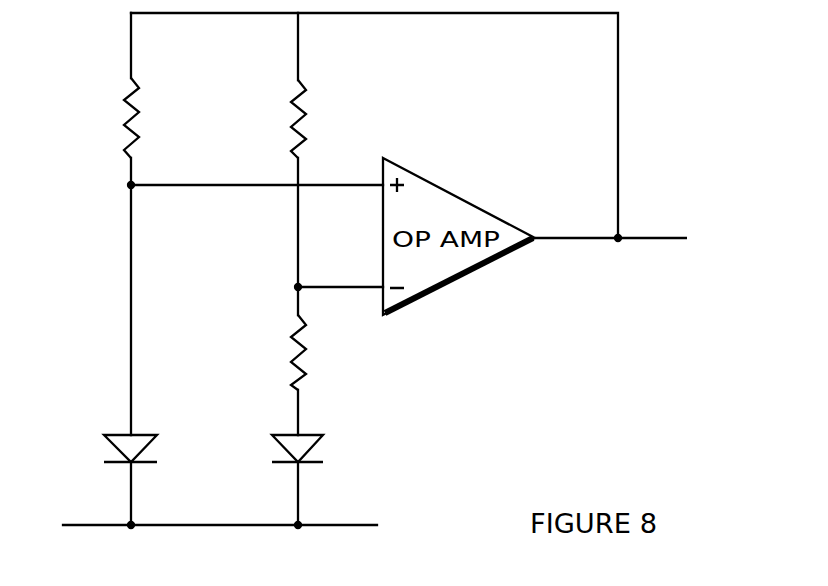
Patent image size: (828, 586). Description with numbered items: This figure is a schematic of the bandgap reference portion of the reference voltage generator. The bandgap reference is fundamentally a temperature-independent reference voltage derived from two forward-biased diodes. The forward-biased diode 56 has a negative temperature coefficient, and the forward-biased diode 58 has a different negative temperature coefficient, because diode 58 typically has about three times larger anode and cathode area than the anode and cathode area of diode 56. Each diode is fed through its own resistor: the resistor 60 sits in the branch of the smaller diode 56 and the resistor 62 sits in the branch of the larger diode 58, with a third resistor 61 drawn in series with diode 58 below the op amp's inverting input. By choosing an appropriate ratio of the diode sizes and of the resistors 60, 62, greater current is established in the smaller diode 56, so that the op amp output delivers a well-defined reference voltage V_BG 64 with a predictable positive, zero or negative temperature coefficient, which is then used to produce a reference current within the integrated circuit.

The forward-biased diode 56 is at (141, 463).
The forward-biased diode 58 is at (318, 447).
The resistor 60 is at (122, 143).
The third resistor R3 61 is at (303, 333).
The resistor 62 is at (303, 101).
The reference voltage V_BG 64 is at (590, 240).